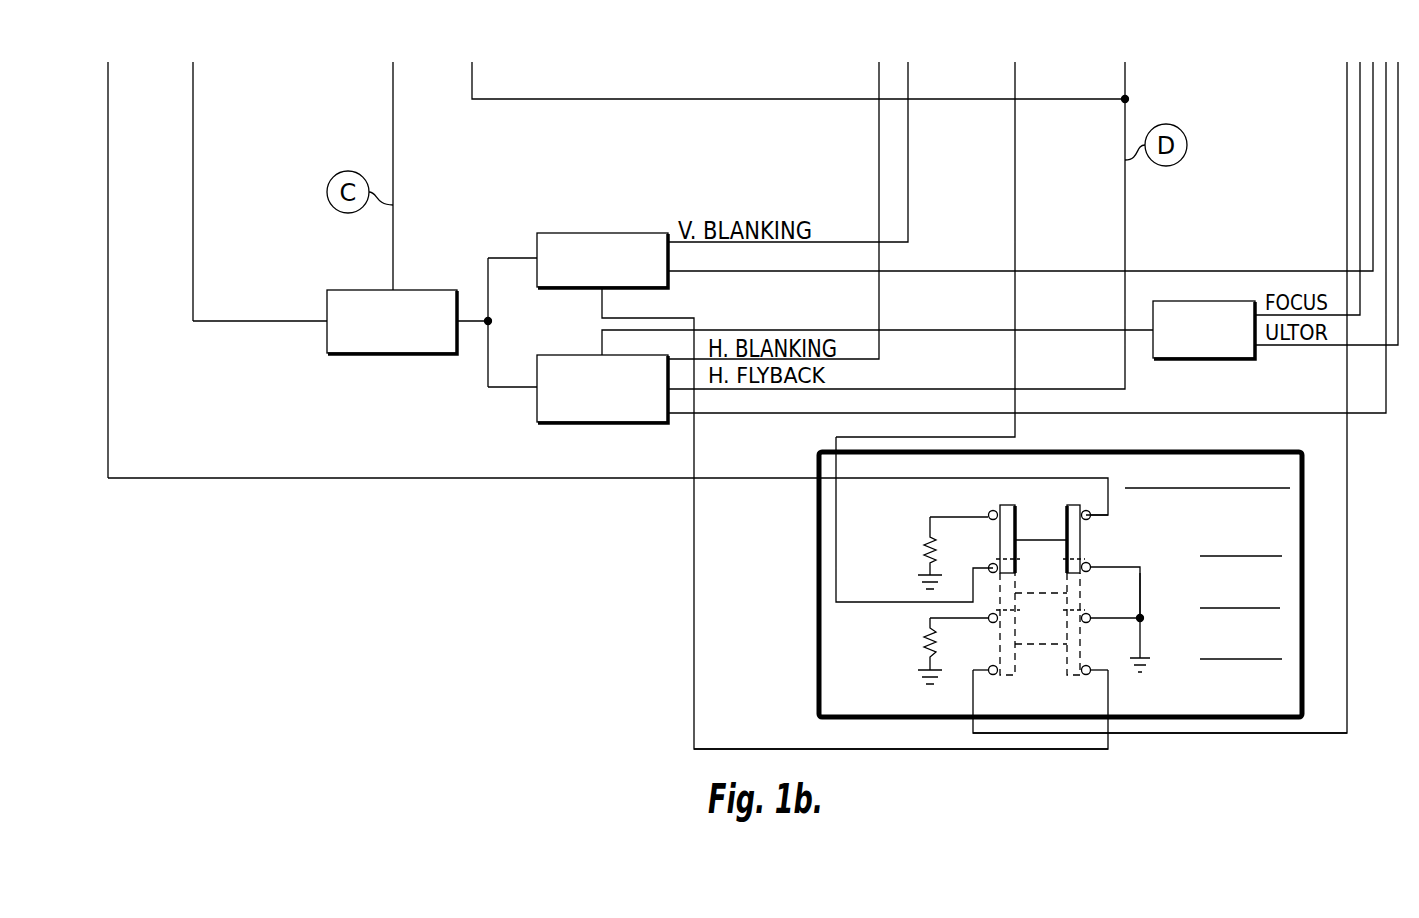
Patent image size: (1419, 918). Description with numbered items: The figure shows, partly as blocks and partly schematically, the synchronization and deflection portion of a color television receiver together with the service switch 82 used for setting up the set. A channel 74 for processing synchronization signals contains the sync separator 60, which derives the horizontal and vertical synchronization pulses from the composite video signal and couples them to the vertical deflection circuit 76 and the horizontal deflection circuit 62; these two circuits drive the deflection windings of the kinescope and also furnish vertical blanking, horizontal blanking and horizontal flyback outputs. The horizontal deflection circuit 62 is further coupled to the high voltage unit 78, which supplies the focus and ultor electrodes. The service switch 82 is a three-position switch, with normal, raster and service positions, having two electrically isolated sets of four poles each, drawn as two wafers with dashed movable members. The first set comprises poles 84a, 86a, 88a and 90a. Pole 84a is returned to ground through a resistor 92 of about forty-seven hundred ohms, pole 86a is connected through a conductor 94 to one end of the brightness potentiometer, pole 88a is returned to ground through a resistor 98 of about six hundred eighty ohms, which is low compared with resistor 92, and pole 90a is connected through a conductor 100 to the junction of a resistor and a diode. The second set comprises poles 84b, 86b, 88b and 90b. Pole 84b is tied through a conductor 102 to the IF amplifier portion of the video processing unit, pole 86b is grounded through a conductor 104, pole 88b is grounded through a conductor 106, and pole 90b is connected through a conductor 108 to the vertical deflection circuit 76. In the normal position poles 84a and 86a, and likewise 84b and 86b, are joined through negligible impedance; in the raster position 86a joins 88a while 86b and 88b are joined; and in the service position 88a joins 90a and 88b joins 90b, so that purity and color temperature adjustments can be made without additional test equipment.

The sync separator 60 is at (397, 354).
The horizontal deflection circuit 62 is at (597, 425).
The channel for processing synchronization signals 74 is at (262, 423).
The vertical deflection circuit 76 is at (609, 214).
The high voltage unit 78 is at (1210, 359).
The service switch 82 is at (1224, 521).
The pole 84a is at (990, 510).
The pole 84b is at (1088, 520).
The pole 86a is at (991, 563).
The pole 86b is at (1088, 572).
The pole 88a is at (990, 622).
The pole 88b is at (1088, 623).
The pole 90a is at (990, 675).
The pole 90b is at (1090, 675).
The resistor 92 is at (928, 531).
The conductor 94 is at (832, 437).
The resistor 98 is at (929, 631).
The conductor 100 is at (1250, 733).
The conductor 102 is at (424, 478).
The conductor 104 is at (1142, 592).
The conductor 106 is at (1138, 615).
The conductor 108 is at (792, 749).